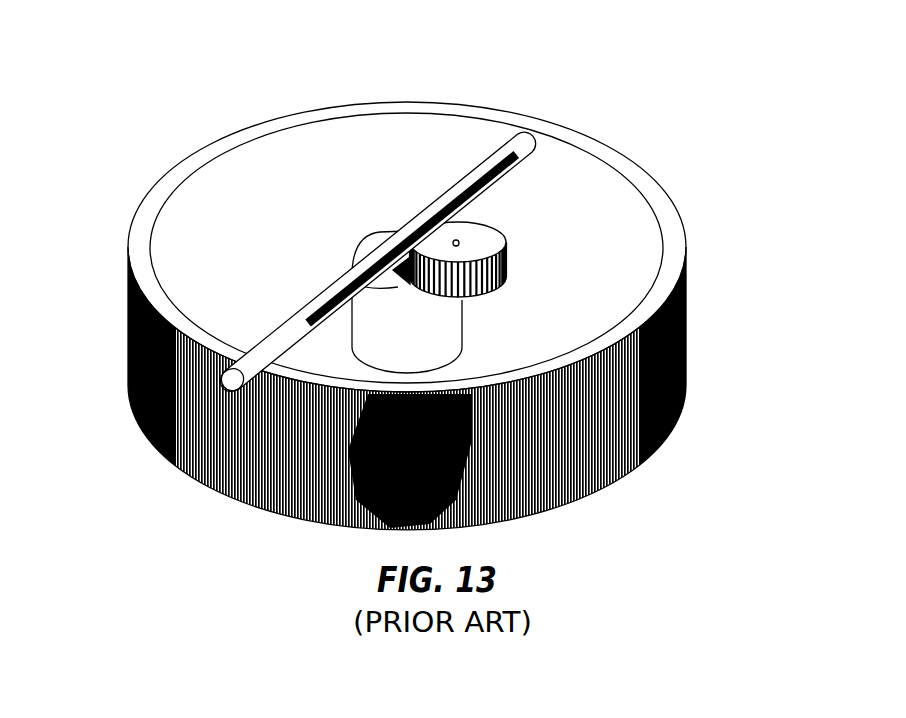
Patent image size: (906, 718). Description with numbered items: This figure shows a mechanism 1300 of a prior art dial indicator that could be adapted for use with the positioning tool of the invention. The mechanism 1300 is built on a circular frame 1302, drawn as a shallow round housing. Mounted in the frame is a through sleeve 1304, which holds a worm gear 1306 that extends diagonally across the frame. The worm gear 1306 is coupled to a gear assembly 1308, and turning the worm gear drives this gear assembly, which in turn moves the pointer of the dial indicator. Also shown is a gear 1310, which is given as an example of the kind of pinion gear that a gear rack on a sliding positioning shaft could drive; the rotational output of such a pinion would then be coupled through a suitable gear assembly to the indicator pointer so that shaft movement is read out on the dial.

The mechanism 1300 is at (422, 281).
The circular frame 1302 is at (657, 298).
The through sleeve 1304 is at (585, 188).
The worm gear 1306 is at (288, 330).
The gear assembly 1308 is at (530, 293).
The gear 1310 is at (437, 237).